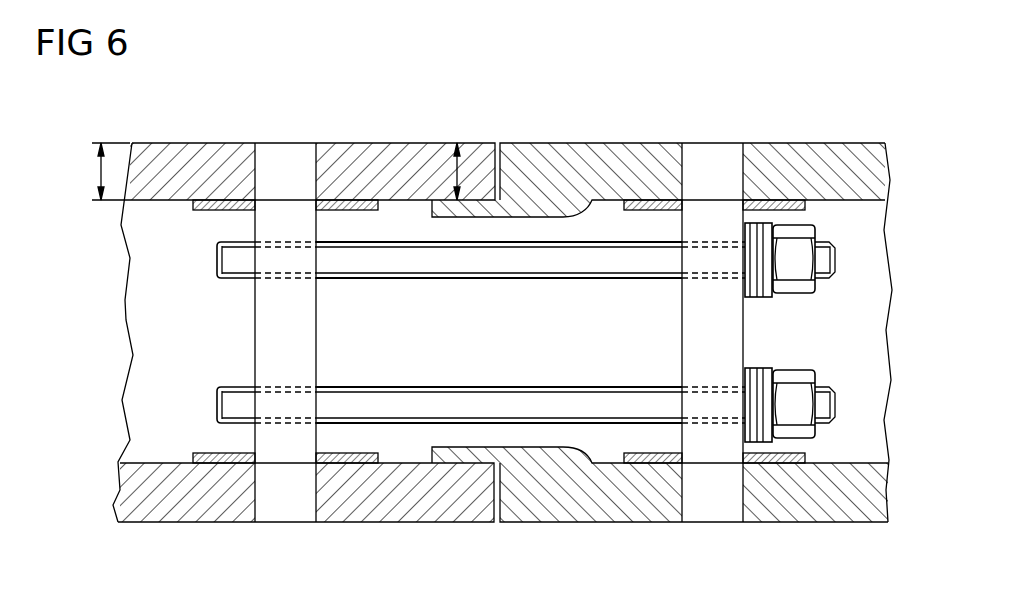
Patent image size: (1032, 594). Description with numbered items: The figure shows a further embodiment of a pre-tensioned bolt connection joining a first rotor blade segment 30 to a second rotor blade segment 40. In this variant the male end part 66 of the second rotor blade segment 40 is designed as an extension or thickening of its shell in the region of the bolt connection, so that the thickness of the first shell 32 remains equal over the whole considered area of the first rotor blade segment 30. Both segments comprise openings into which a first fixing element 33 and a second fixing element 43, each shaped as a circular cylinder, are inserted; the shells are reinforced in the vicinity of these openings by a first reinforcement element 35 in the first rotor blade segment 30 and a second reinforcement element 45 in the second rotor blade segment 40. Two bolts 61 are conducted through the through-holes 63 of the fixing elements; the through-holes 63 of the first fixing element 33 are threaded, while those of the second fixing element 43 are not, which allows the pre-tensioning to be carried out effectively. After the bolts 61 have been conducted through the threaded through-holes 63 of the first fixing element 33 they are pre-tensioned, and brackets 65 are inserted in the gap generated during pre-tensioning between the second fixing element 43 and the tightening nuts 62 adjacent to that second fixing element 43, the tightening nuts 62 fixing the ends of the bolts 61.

The first rotor blade segment 30 is at (178, 152).
The first shell 32 is at (101, 172).
The first fixing element 33 is at (290, 152).
The first reinforcement element 35 is at (232, 203).
The second rotor blade segment 40 is at (845, 150).
The second fixing element 43 is at (710, 150).
The second reinforcement element 45 is at (778, 205).
The bolt 61 is at (508, 398).
The tightening nut 62 is at (793, 378).
The through-hole 63 is at (296, 400).
The bracket 65 is at (752, 262).
The male end part 66 is at (471, 210).